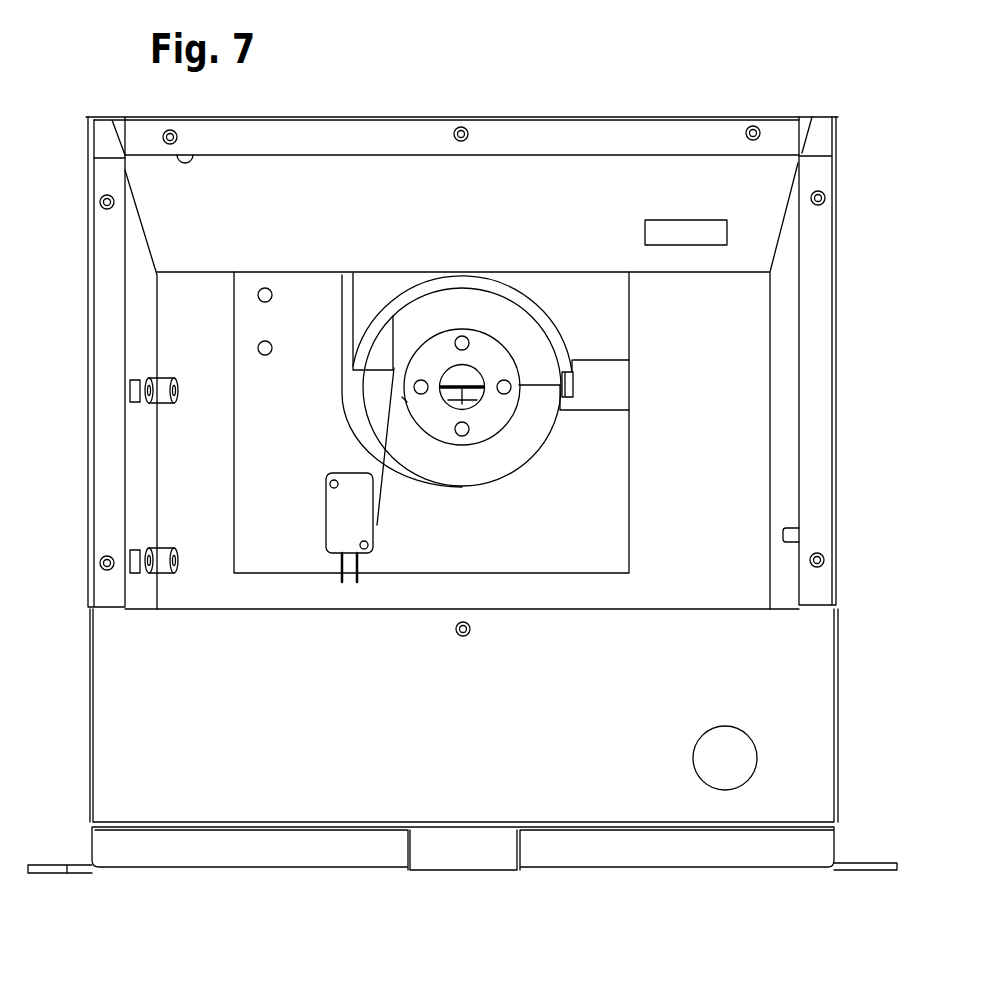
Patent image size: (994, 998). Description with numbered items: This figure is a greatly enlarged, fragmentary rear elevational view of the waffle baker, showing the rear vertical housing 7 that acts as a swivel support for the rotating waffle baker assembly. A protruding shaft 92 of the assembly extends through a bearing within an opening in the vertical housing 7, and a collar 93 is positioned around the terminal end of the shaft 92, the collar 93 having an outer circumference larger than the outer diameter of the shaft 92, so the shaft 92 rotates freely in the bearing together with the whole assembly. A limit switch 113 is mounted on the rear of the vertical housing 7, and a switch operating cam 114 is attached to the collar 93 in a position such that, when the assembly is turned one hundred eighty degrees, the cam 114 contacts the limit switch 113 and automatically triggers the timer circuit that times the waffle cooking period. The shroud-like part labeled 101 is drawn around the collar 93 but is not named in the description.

The rear vertical housing 7 is at (518, 137).
The protruding shaft 92 is at (467, 381).
The collar 93 is at (493, 457).
The shroud 101 is at (525, 300).
The limit switch 113 is at (342, 530).
The switch operating cam 114 is at (540, 383).